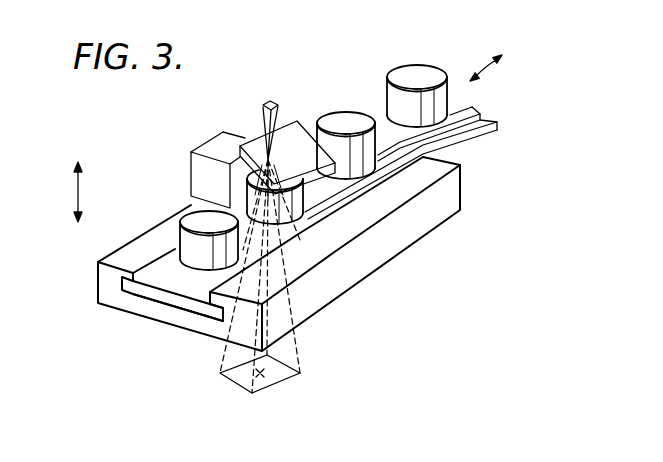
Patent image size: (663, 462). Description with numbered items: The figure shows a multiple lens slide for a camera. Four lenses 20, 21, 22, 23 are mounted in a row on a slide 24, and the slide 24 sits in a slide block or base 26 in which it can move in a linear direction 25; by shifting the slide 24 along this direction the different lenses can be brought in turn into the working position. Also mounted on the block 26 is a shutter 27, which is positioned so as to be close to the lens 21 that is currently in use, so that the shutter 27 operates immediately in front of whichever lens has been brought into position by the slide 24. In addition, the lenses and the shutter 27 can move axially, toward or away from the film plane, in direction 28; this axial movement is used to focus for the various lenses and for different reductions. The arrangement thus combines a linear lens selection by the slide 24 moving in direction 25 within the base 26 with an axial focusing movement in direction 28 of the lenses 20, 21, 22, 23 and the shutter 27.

The lens 20 is at (181, 229).
The lens 21 is at (302, 200).
The lens 22 is at (345, 118).
The lens 23 is at (403, 72).
The slide 24 is at (176, 301).
The linear direction 25 is at (487, 70).
The slide block or base 26 is at (436, 220).
The shutter 27 is at (258, 139).
The axial direction 28 is at (77, 190).